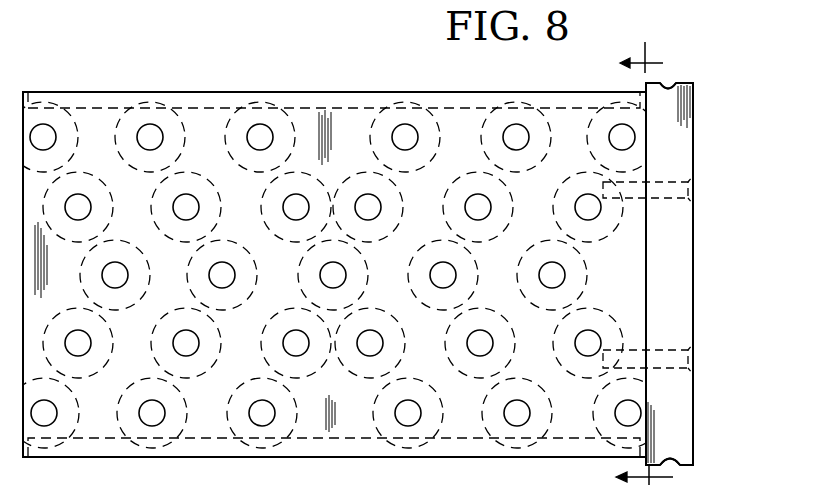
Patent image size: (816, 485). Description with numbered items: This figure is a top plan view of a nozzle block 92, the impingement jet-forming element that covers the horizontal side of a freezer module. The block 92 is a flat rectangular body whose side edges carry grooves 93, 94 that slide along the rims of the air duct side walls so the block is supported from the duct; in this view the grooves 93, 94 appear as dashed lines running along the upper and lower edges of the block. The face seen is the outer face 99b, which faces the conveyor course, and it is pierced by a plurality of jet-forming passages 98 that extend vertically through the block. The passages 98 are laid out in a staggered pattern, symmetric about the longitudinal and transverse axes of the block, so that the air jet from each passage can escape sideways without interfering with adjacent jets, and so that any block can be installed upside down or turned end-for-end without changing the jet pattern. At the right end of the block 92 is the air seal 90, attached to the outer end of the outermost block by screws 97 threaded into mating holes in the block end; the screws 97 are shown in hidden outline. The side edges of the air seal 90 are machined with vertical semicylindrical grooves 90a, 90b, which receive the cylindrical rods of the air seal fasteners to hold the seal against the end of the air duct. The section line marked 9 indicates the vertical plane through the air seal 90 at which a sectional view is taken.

The section line 9- 9 is at (644, 261).
The air seal 90 is at (677, 128).
The vertical semicylindrical groove 90a is at (672, 459).
The vertical semicylindrical groove 90b is at (667, 89).
The nozzle block 92 is at (352, 126).
The groove 93 is at (328, 440).
The groove 94 is at (318, 108).
The screws 97 is at (681, 205).
The jet-forming passages 98 is at (441, 268).
The outer face 99b is at (199, 481).